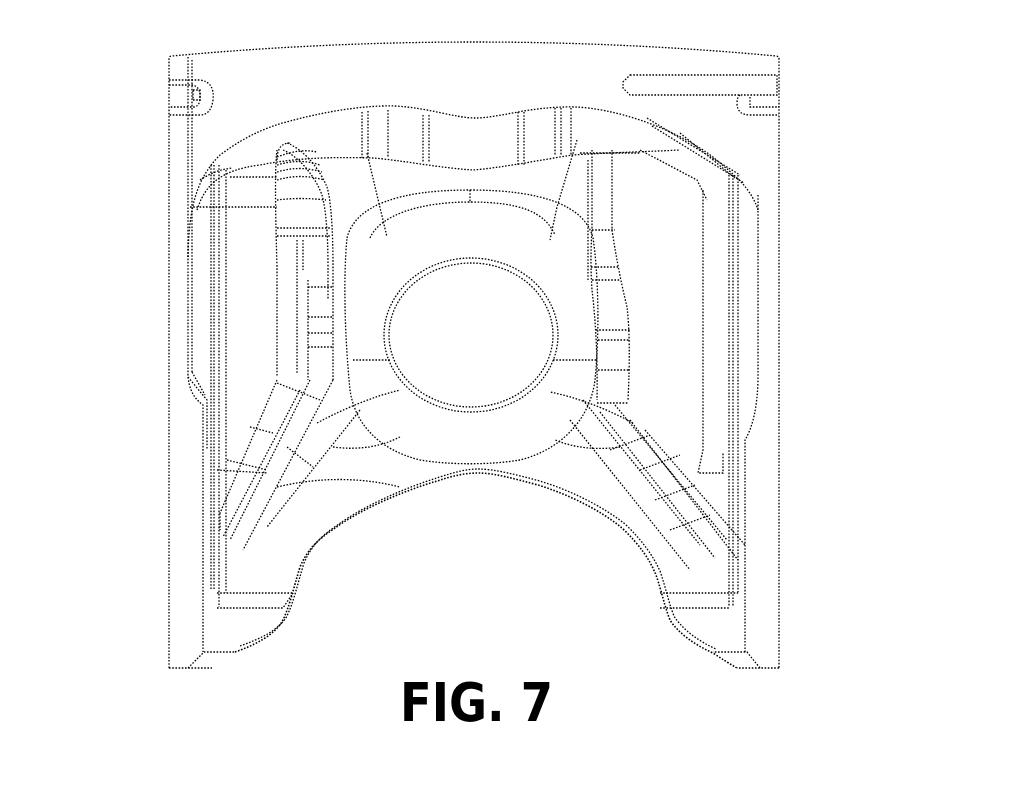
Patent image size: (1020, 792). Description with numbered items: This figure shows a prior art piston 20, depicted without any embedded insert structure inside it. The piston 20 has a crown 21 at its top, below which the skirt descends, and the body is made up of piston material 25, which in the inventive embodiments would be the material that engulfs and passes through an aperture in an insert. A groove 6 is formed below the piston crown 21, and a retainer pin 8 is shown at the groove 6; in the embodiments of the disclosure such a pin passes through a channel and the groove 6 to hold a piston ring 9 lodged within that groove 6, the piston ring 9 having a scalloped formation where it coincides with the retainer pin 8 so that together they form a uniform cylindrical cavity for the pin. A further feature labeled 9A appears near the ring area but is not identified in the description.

The piston 20 is at (90, 320).
The crown 21 is at (300, 40).
The piston material 25 is at (473, 158).
The groove 6 is at (212, 90).
The retainer pin 8 is at (692, 72).
The piston ring 9 is at (160, 97).
The oil ring groove 9A is at (790, 97).